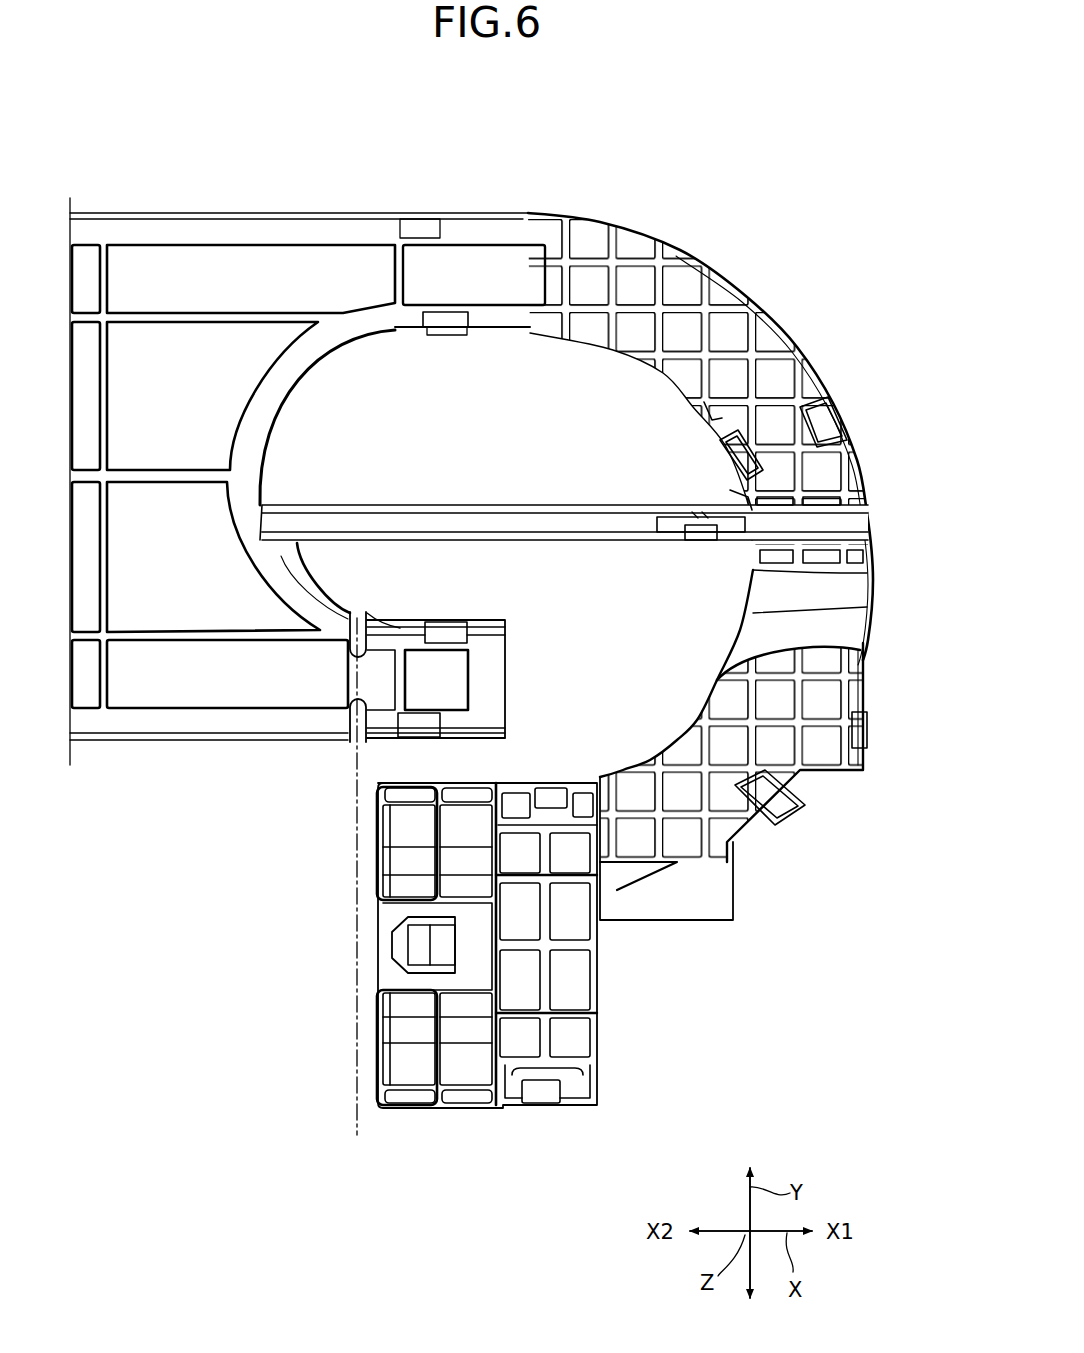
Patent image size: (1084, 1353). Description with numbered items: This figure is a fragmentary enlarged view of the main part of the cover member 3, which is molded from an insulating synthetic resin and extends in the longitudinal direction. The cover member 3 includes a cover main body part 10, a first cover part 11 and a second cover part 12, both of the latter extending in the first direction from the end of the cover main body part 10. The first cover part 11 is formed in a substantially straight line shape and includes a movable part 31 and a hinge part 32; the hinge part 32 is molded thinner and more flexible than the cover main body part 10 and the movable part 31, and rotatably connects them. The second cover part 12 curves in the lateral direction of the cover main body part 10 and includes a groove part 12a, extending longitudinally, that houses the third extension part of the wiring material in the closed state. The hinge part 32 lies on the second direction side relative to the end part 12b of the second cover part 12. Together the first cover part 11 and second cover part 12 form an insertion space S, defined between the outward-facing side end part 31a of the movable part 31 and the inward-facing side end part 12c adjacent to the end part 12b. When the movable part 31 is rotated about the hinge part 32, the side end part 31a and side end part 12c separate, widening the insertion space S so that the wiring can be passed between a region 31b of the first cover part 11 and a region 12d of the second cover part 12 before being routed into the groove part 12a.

The cover member 3 is at (666, 171).
The cover main body part 10 is at (187, 372).
The first cover part 11 is at (398, 566).
The second cover part 12 is at (817, 446).
The groove part 12a is at (845, 594).
The end part 12b is at (378, 845).
The side end part 12c is at (420, 782).
The region 12d is at (378, 790).
The movable part 31 is at (512, 688).
The side end part 31a is at (483, 742).
The region 31b is at (349, 740).
The hinge part 32 is at (344, 676).
The insertion space S is at (449, 748).